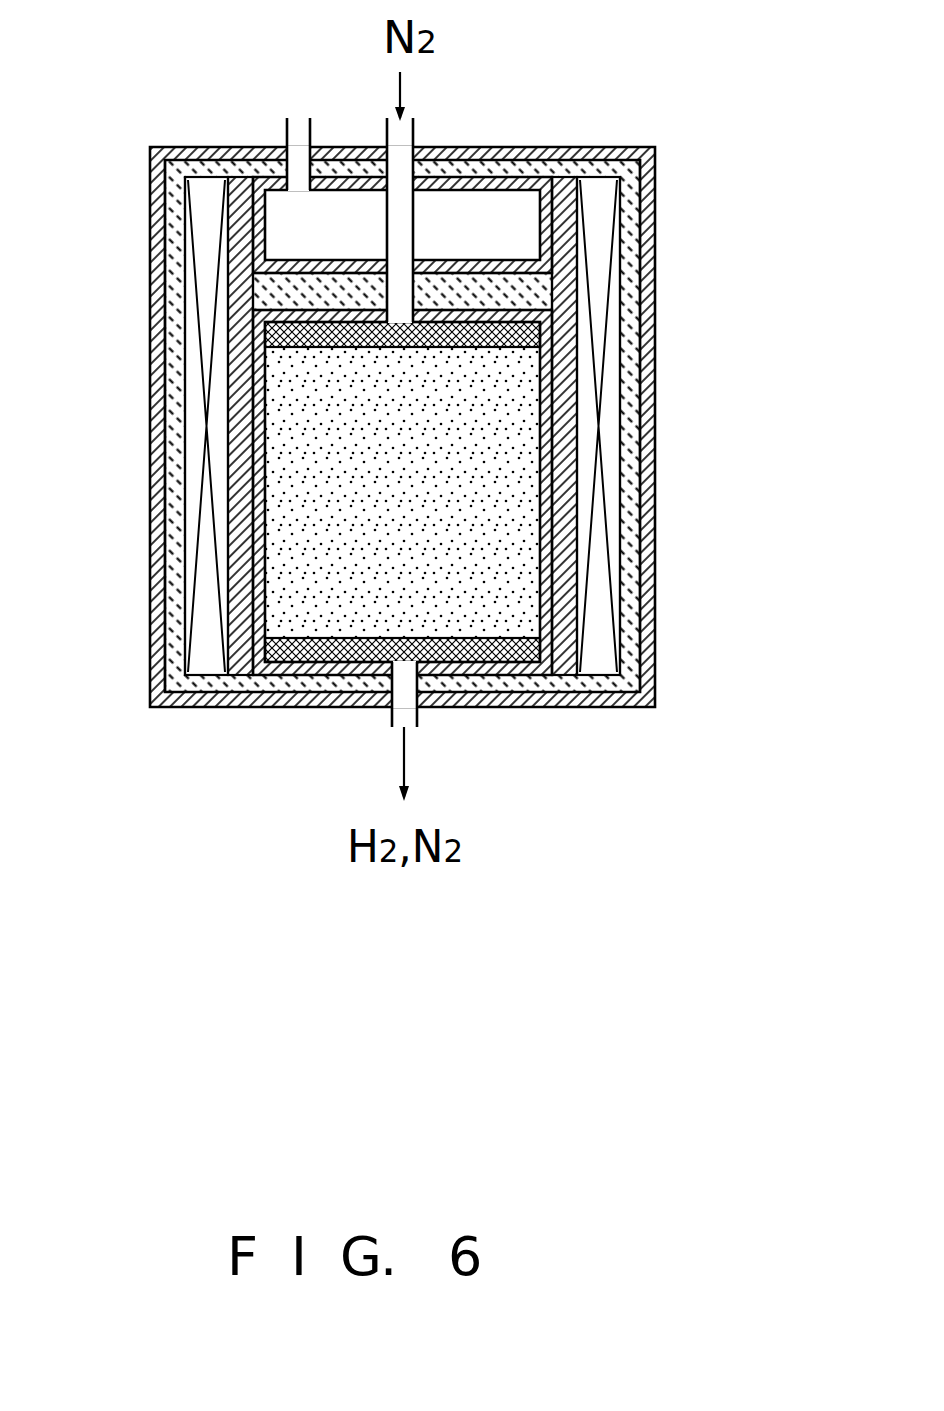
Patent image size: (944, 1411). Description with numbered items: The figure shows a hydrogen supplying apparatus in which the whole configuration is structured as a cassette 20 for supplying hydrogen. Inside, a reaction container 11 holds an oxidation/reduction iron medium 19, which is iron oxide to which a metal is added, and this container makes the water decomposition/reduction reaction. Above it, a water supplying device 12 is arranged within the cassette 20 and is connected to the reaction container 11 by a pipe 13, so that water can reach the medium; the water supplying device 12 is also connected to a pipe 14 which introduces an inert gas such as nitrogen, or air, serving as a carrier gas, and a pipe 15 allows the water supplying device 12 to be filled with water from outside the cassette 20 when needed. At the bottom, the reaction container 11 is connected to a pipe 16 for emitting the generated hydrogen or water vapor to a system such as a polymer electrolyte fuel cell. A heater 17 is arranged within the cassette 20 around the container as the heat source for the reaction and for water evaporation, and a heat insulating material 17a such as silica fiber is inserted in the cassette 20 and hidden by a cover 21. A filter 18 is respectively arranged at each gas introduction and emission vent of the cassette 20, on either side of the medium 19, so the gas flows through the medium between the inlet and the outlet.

The reaction container 11 is at (240, 673).
The water supplying device 12 is at (513, 210).
The pipe 13 is at (423, 297).
The pipe 14 is at (383, 128).
The pipe 15 is at (277, 130).
The pipe 16 is at (418, 720).
The heater 17 is at (607, 442).
The heat insulating material 17a is at (165, 257).
The filter 18 is at (527, 332).
The oxidation/reduction iron medium 19 is at (297, 503).
The cassette 20 is at (669, 245).
The cover 21 is at (653, 183).